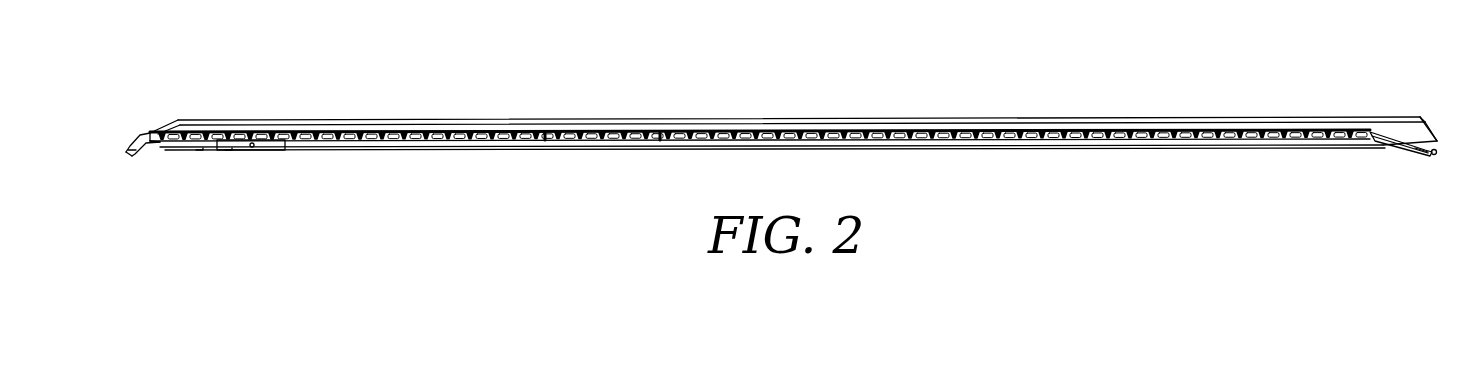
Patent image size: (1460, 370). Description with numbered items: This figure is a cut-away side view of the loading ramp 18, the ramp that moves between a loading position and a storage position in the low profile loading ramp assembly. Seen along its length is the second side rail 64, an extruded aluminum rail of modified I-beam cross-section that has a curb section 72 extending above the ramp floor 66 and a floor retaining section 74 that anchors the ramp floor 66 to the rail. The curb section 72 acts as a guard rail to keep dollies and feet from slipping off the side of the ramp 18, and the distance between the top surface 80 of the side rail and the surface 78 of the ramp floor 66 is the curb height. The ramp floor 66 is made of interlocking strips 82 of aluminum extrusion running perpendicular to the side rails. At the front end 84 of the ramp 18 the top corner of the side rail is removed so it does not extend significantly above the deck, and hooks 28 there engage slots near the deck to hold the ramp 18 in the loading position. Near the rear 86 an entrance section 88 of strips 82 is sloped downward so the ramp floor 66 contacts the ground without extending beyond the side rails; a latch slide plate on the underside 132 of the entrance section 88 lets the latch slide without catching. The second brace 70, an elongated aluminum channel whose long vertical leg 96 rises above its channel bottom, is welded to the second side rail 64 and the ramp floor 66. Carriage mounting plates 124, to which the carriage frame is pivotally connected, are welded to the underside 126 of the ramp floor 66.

The loading ramp 18 is at (838, 74).
The hooks 28 is at (131, 152).
The second side rail 64 is at (983, 122).
The ramp floor 66 is at (1205, 127).
The second brace 70 is at (1007, 142).
The curb section 72 is at (178, 122).
The floor retaining section 74 is at (160, 131).
The surface of the ramp floor 78 is at (572, 130).
The top surface of the side rails 80 is at (268, 118).
The interlocking strips 82 is at (328, 138).
The front end of the ramp 84 is at (165, 77).
The rear of the ramp 86 is at (1412, 93).
The entrance section 88 is at (1393, 147).
The long vertical leg 96 is at (1152, 141).
The carriage mounting plates 124 is at (233, 145).
The underside of the ramp floor 126 is at (695, 140).
The underside of the entrance section 132 is at (1405, 155).